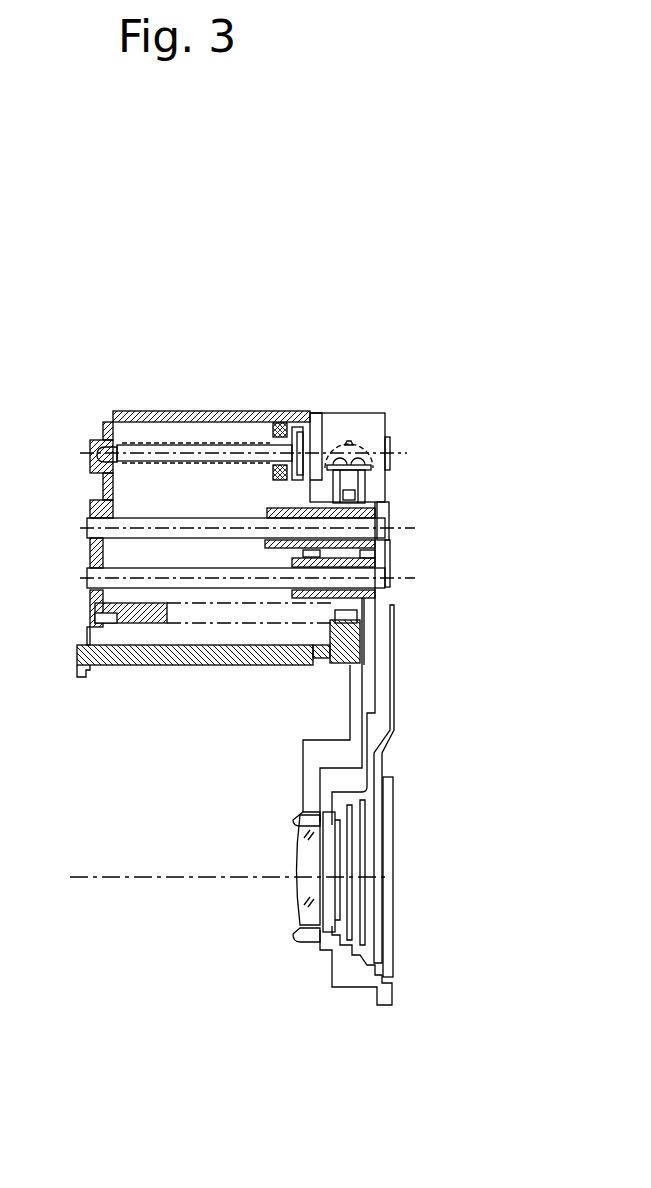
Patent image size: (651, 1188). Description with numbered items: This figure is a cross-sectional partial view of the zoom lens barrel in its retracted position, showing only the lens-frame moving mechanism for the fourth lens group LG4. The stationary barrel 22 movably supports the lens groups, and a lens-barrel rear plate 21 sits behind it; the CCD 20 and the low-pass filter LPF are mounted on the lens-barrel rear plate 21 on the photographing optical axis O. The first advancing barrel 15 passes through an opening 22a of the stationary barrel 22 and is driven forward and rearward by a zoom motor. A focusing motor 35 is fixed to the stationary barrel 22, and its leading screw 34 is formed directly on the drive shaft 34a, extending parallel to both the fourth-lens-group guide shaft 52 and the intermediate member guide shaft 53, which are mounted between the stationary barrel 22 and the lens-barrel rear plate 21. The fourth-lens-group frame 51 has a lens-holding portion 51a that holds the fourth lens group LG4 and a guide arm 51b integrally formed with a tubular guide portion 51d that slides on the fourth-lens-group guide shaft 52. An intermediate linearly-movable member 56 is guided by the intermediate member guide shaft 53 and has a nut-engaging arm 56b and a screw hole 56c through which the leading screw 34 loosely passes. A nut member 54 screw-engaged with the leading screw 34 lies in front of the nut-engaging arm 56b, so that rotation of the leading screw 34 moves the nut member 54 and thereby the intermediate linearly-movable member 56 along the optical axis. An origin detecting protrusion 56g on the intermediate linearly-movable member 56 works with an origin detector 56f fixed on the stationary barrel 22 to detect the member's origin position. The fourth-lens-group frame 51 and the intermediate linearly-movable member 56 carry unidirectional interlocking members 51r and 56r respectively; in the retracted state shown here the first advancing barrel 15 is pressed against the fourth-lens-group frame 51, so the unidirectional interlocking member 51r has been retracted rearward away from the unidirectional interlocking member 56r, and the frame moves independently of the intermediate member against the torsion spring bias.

The first advancing barrel 15 is at (138, 665).
The CCD 20 is at (372, 855).
The lens-barrel rear plate 21 is at (383, 628).
The stationary barrel 22 is at (203, 412).
The opening 22a is at (94, 668).
The leading screw 34 is at (152, 447).
The drive shaft 34a is at (320, 412).
The focusing motor 35 is at (357, 413).
The fourth-lens-group frame 51 is at (280, 742).
The lens-holding portion 51a is at (293, 815).
The guide arm 51b is at (350, 692).
The tubular guide portion 51d is at (383, 562).
The unidirectional interlocking member 51r is at (385, 551).
The fourth-lens-group guide shaft 52 is at (125, 572).
The intermediate member guide shaft 53 is at (122, 522).
The nut member 54 is at (273, 413).
The intermediate linearly-movable member 56 is at (380, 497).
The nut-engaging arm 56b is at (280, 480).
The screw hole 56c is at (296, 424).
The origin detector 56f is at (388, 483).
The origin detecting protrusion 56g is at (390, 490).
The unidirectional interlocking member 56r is at (290, 545).
The fourth lens group LG4 is at (312, 887).
The low-pass filter LPF is at (343, 915).
The photographing optical axis O is at (213, 879).